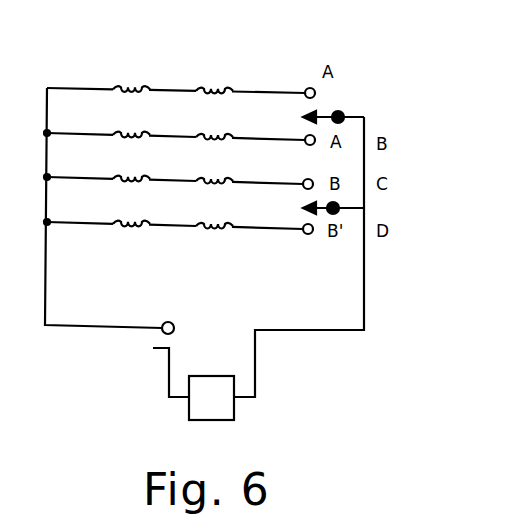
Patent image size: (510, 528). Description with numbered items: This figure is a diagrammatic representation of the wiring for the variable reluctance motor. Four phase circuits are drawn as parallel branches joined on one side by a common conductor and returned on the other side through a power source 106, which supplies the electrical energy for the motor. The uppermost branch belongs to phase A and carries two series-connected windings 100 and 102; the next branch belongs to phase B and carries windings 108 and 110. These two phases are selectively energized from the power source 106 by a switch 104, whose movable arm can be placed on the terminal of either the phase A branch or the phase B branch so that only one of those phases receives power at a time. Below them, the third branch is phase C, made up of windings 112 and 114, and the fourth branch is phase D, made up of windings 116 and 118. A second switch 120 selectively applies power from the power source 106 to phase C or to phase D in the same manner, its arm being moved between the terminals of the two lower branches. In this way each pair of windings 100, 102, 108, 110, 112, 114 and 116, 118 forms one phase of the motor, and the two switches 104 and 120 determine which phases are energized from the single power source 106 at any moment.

The winding 100 is at (134, 87).
The winding 102 is at (218, 87).
The switch 104 is at (323, 97).
The power source 106 is at (215, 421).
The winding 108 is at (135, 134).
The winding 110 is at (219, 134).
The winding 112 is at (133, 178).
The winding 114 is at (217, 179).
The winding 116 is at (133, 223).
The winding 118 is at (217, 224).
The switch 120 is at (348, 209).